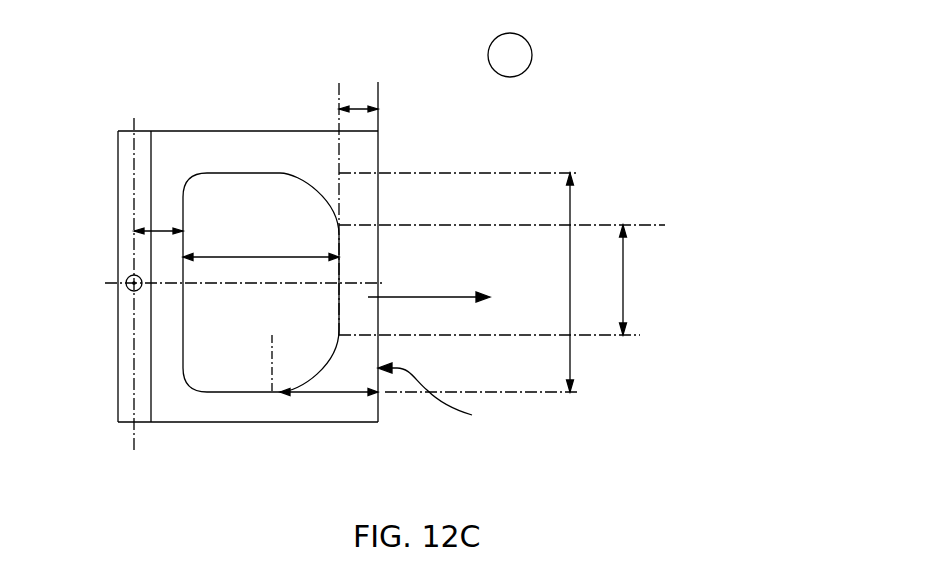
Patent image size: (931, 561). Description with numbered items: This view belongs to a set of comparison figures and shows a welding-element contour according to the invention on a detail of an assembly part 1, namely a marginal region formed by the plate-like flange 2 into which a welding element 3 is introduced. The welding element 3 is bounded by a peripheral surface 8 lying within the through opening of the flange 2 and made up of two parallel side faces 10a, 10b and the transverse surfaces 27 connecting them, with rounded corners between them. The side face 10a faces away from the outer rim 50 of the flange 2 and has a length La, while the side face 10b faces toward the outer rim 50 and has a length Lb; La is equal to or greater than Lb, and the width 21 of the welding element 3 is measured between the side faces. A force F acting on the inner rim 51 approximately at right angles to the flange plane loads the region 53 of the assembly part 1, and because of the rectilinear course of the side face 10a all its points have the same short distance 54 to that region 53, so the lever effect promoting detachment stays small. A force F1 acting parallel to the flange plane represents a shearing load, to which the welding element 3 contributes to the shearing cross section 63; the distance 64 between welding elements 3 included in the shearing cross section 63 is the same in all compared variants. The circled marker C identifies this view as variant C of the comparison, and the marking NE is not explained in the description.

The assembly part 1 is at (297, 131).
The flange 2 is at (185, 145).
The welding element 3 is at (263, 393).
The peripheral surface 8 is at (233, 393).
The side face facing away from the outer rim 10a is at (183, 343).
The side face facing toward the outer rim 10b is at (341, 262).
The width 21 is at (293, 257).
The transverse surfaces 27 is at (215, 173).
The outer rim 50 is at (378, 173).
The inner rim 51 is at (118, 355).
The region acted on by the force 53 is at (134, 118).
The distance 54 is at (155, 231).
The shearing cross section 63 is at (337, 392).
The distance between the welding elements 64 is at (358, 105).
The section C is at (510, 55).
The force F is at (127, 277).
The force F1 is at (452, 297).
The length of side face 10a La is at (576, 195).
The length of side face 10b Lb is at (628, 287).
The neutral axis NE is at (442, 395).